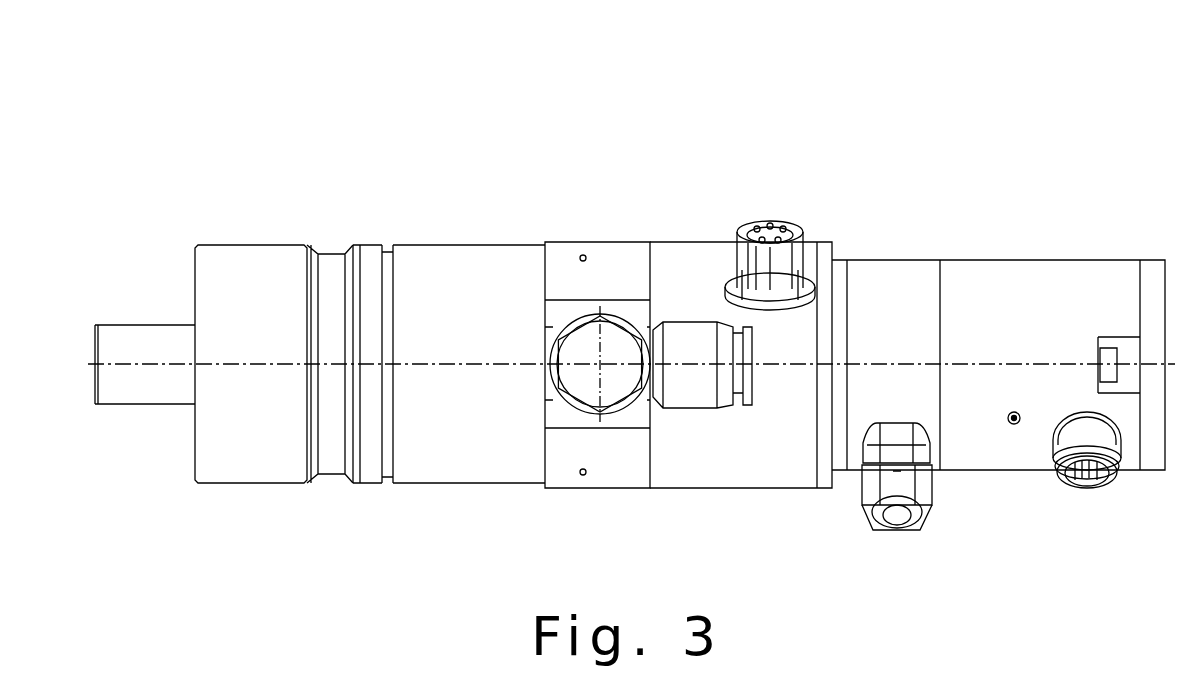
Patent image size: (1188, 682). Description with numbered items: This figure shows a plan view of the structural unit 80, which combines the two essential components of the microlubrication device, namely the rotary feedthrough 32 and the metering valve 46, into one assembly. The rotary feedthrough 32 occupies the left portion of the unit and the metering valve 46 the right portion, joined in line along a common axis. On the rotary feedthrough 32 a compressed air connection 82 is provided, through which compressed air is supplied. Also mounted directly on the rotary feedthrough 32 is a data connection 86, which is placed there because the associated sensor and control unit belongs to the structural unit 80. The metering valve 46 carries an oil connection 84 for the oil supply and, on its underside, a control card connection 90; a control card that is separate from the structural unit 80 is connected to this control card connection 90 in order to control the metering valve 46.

The structural unit 80 is at (311, 160).
The rotary feedthrough 32 is at (450, 458).
The compressed air connection 82 is at (683, 338).
The oil connection 84 is at (897, 517).
The data connection 86 is at (767, 218).
The metering valve 46 is at (987, 467).
The control card connection 90 is at (1093, 473).